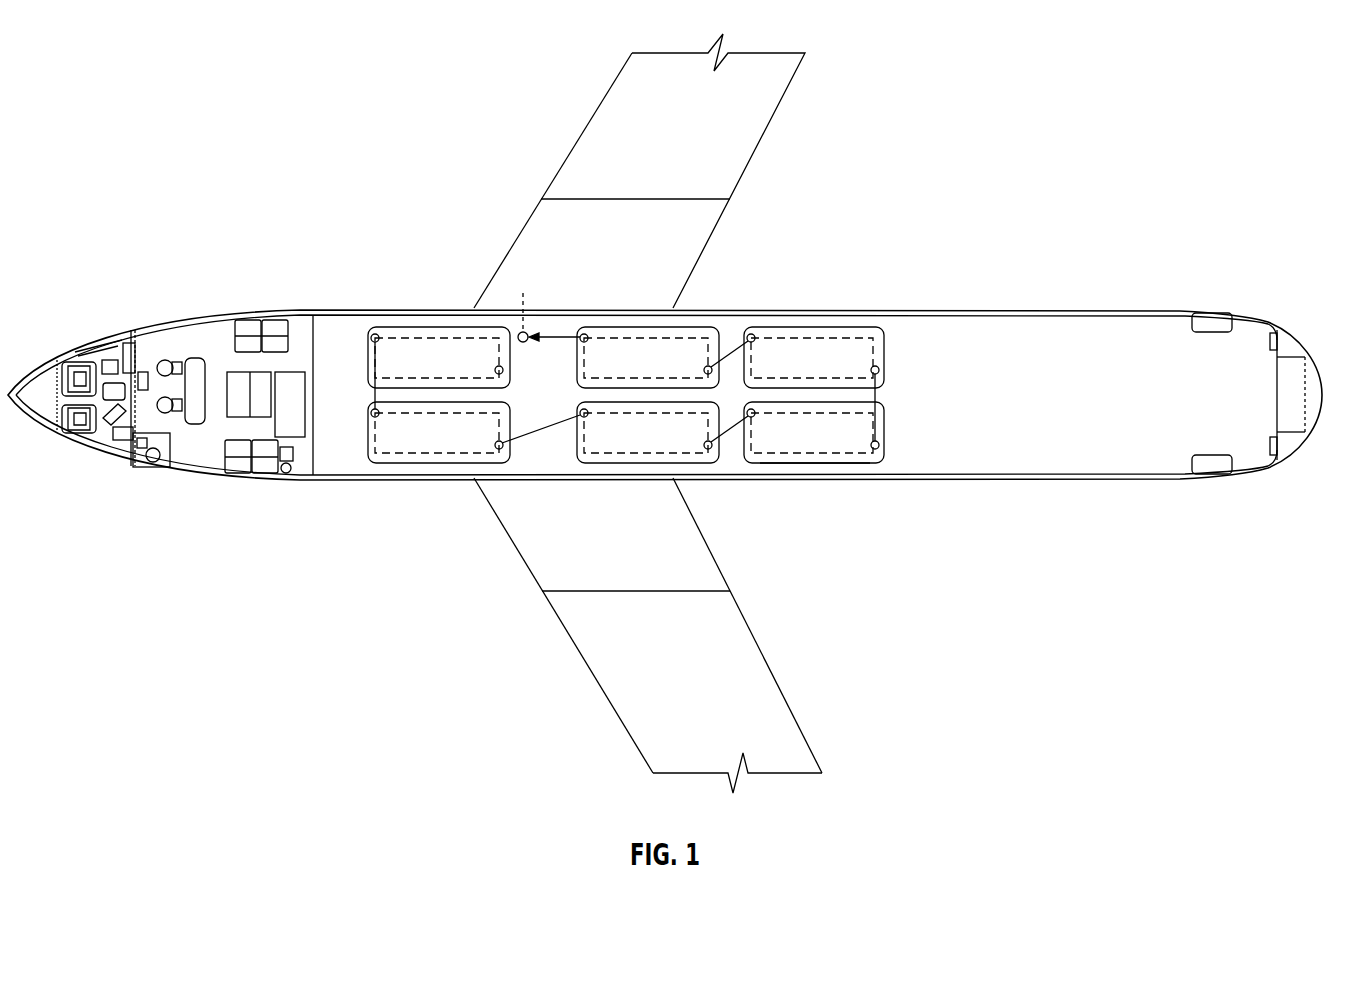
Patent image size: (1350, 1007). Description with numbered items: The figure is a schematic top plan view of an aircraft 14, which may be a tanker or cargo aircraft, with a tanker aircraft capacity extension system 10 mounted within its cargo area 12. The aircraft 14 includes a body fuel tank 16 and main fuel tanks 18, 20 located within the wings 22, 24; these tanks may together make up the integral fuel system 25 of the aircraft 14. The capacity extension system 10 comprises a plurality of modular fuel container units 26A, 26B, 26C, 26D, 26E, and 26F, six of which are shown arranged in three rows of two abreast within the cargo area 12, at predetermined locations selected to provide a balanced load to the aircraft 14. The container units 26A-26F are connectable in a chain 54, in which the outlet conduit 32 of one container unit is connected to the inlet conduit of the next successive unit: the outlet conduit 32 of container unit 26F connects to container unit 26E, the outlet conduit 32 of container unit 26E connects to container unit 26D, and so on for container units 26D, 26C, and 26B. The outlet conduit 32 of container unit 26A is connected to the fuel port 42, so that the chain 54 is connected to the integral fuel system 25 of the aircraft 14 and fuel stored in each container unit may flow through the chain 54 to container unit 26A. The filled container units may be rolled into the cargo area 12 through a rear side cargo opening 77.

The tanker aircraft capacity extension system 10 is at (802, 312).
The cargo area 12 is at (950, 325).
The aircraft 14 is at (1034, 308).
The body fuel tank 16 is at (522, 540).
The main fuel tank 18 is at (735, 173).
The main fuel tank 20 is at (762, 662).
The wing 22 is at (551, 181).
The wing 24 is at (589, 670).
The integral fuel system 25 is at (571, 567).
The modular fuel container unit 26A is at (655, 324).
The modular fuel container unit 26B is at (870, 330).
The modular fuel container unit 26C is at (880, 432).
The modular fuel container unit 26D is at (697, 460).
The modular fuel container unit 26E is at (438, 460).
The modular fuel container unit 26F is at (423, 330).
The outlet conduit 32 is at (375, 395).
The fuel port 42 is at (529, 332).
The chain 54 is at (833, 467).
The rear side cargo opening 77 is at (1258, 350).